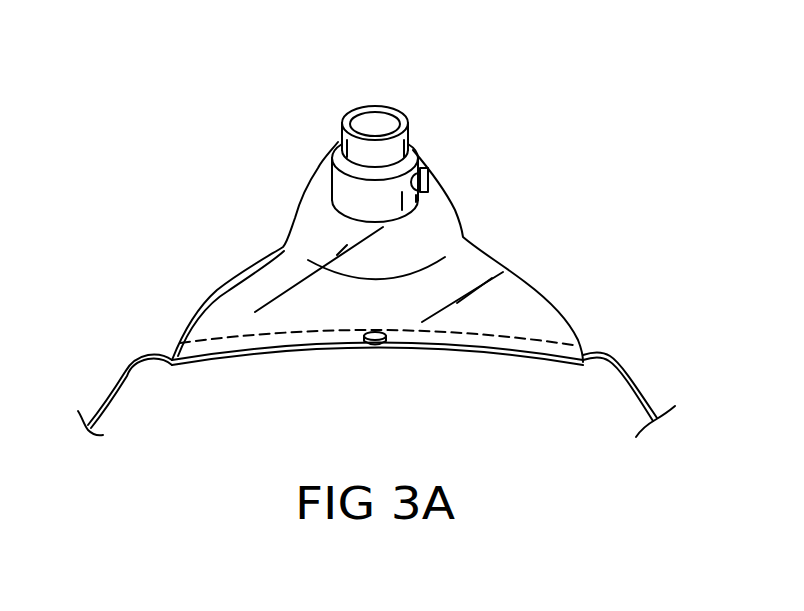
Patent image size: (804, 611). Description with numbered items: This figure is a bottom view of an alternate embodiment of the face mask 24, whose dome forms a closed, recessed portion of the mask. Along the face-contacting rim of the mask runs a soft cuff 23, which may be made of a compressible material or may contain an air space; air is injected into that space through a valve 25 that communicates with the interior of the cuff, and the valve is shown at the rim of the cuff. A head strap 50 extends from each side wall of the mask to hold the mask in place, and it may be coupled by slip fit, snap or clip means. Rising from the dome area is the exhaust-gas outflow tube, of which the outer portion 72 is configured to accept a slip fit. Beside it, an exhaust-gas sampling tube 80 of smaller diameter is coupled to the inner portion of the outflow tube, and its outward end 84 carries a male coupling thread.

The soft cuff 23 is at (475, 358).
The mask 24 is at (453, 197).
The valve 25 is at (372, 346).
The head strap 50 is at (117, 384).
The outer portion of exhaust-gas outflow tube 72 is at (386, 107).
The exhaust-gas sampling tube 80 is at (418, 168).
The outward end of exhaust-gas sampling tube 84 is at (428, 170).